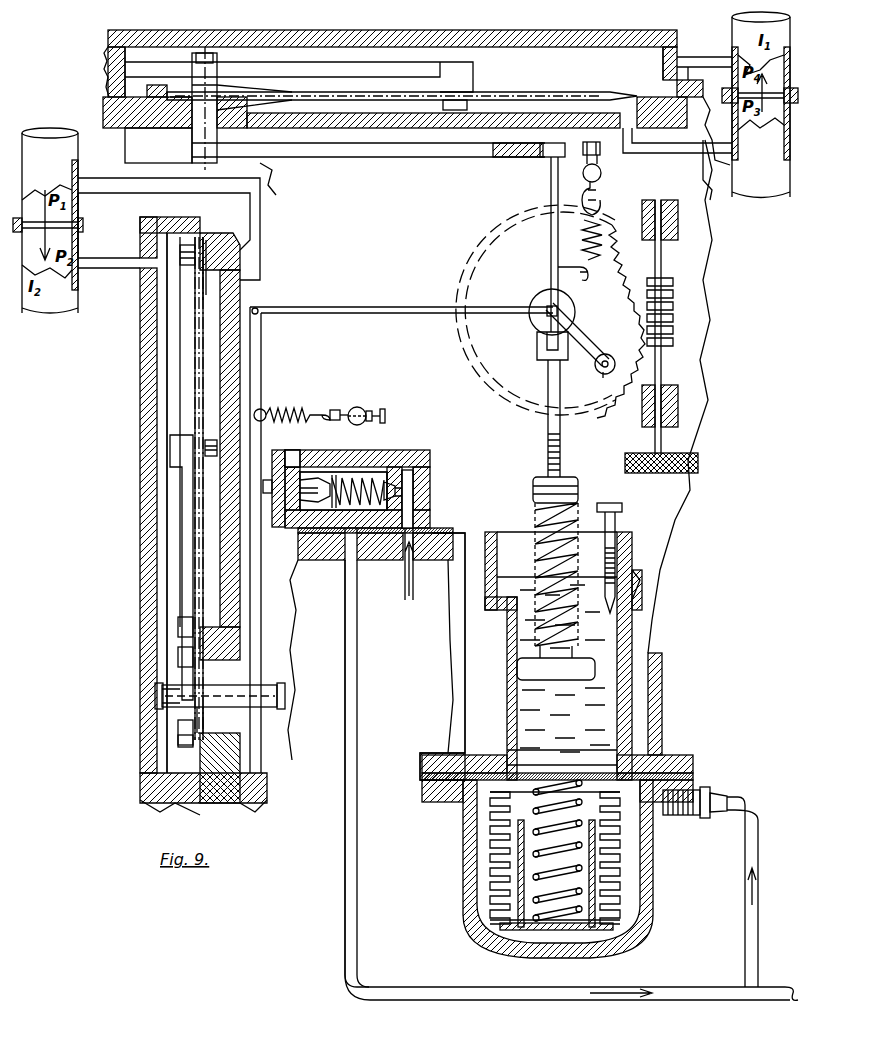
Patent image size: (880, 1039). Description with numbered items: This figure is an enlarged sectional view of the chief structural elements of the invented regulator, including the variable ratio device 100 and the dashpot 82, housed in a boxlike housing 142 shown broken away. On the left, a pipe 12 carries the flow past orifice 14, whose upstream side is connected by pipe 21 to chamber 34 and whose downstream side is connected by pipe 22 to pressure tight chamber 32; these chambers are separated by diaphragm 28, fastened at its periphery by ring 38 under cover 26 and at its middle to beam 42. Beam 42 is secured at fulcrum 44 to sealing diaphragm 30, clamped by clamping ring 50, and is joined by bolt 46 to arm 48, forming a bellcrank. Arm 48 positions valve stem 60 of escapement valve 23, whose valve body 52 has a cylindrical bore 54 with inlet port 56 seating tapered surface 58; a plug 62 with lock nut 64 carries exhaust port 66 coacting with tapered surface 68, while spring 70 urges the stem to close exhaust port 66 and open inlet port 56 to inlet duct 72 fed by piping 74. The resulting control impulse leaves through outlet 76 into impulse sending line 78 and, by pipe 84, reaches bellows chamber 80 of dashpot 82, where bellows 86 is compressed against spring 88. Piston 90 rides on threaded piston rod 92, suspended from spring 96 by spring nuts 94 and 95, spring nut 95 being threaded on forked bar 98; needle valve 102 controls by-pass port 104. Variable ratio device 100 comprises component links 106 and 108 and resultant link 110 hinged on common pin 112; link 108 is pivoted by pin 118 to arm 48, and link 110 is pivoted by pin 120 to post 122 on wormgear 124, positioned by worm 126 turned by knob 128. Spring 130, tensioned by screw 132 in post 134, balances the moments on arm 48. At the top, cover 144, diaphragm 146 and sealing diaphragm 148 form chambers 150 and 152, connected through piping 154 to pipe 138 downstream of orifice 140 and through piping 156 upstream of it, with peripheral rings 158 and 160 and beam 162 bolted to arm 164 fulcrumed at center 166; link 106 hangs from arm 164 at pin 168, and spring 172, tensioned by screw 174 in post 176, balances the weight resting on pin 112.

The inlet pipe 12 is at (50, 140).
The orifice 14 is at (80, 210).
The pipe 21 is at (110, 180).
The pipe 22 is at (110, 272).
The escapement valve 23 is at (377, 506).
The cover 26 is at (142, 410).
The diaphragm 28 is at (195, 305).
The sealing diaphragm 30 is at (210, 720).
The pressure tight chamber 32 is at (170, 503).
The chamber 34 is at (250, 292).
The ring 38 is at (194, 252).
The beam 42 is at (178, 437).
The fulcrum 44 is at (200, 697).
The bolt 46 is at (270, 690).
The arm 48 is at (258, 352).
The clamping ring 50 is at (196, 750).
The valve body 52 is at (373, 479).
The cylindrical bore 54 is at (370, 470).
The inlet port 56 is at (400, 475).
The tapered surface 58 is at (428, 505).
The valve stem 60 is at (343, 491).
The plug 62 is at (280, 452).
The lock nut 64 is at (300, 453).
The exhaust port 66 is at (275, 530).
The tapered surface 68 is at (322, 467).
The spring 70 is at (388, 470).
The inlet duct 72 is at (425, 488).
The piping 74 is at (416, 585).
The outlet 76 is at (355, 562).
The impulse sending line 78 is at (418, 987).
The bellows chamber 80 is at (640, 905).
The dashpot 82 is at (485, 770).
The pipe 84 is at (758, 882).
The bellows 86 is at (600, 880).
The spring 88 is at (553, 905).
The piston 90 is at (556, 663).
The threaded piston rod 92 is at (520, 610).
The spring nut 94 is at (535, 565).
The spring nut 95 is at (535, 485).
The spring 96 is at (580, 492).
The forked bar 98 is at (562, 443).
The variable ratio device 100 is at (535, 310).
The needle valve 102 is at (622, 508).
The by-pass port 104 is at (630, 607).
The component link 106 is at (558, 305).
The component link 108 is at (345, 310).
The resultant link 110 is at (586, 334).
The common pin 112 is at (546, 318).
The pin 118 is at (258, 308).
The pin 120 is at (610, 356).
The post 122 is at (598, 376).
The wormgear 124 is at (590, 410).
The worm 126 is at (675, 350).
The knob 128 is at (700, 464).
The spring 130 is at (302, 412).
The screw 132 is at (386, 416).
The post 134 is at (360, 406).
The pipe 138 is at (740, 30).
The orifice 140 is at (743, 148).
The boxlike housing 142 is at (385, 562).
The cover 144 is at (118, 52).
The diaphragm 146 is at (300, 100).
The sealing diaphragm 148 is at (230, 97).
The chamber 150 is at (392, 63).
The chamber 152 is at (403, 104).
The piping 154 is at (685, 57).
The piping 156 is at (712, 155).
The peripheral ring 158 is at (553, 92).
The peripheral ring 160 is at (157, 85).
The beam 162 is at (332, 68).
The arm 164 is at (367, 155).
The center 166 is at (192, 140).
The pin 168 is at (540, 160).
The spring 172 is at (597, 215).
The screw 174 is at (600, 152).
The post 176 is at (583, 173).